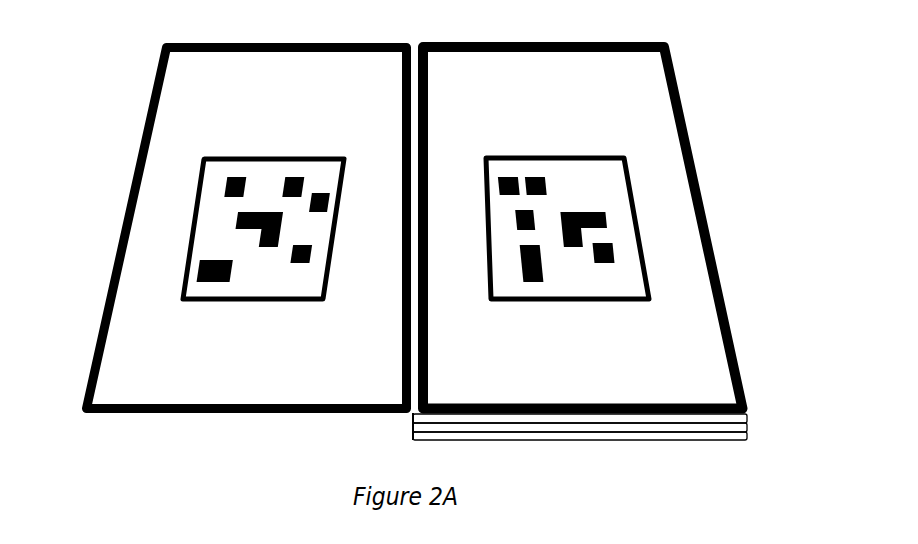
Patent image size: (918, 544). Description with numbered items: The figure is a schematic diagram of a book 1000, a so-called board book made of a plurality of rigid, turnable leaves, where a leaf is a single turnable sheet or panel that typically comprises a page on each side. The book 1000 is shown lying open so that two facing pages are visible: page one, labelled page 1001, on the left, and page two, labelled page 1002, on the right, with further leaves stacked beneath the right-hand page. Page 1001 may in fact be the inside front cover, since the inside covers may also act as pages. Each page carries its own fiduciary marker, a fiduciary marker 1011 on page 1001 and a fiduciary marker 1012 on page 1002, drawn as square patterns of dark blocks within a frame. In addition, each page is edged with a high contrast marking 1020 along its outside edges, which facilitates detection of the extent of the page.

The book 1000 is at (254, 460).
The page 1001 is at (230, 228).
The page 1002 is at (616, 184).
The fiduciary marker 1011 is at (180, 192).
The fiduciary marker 1012 is at (648, 194).
The high contrast marking 1020 is at (688, 81).